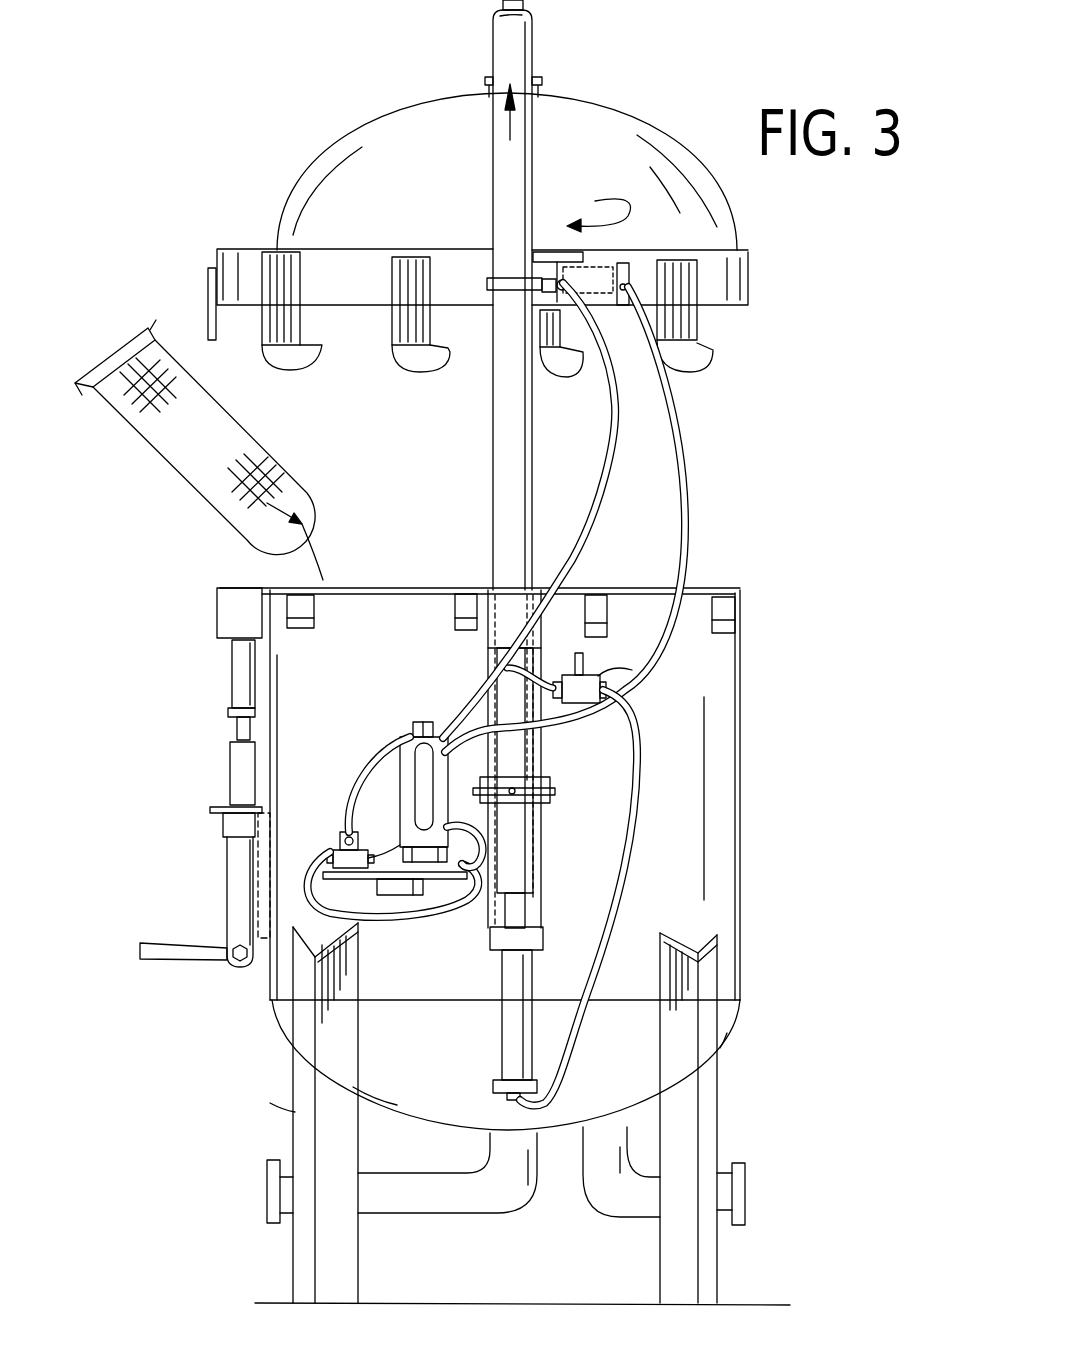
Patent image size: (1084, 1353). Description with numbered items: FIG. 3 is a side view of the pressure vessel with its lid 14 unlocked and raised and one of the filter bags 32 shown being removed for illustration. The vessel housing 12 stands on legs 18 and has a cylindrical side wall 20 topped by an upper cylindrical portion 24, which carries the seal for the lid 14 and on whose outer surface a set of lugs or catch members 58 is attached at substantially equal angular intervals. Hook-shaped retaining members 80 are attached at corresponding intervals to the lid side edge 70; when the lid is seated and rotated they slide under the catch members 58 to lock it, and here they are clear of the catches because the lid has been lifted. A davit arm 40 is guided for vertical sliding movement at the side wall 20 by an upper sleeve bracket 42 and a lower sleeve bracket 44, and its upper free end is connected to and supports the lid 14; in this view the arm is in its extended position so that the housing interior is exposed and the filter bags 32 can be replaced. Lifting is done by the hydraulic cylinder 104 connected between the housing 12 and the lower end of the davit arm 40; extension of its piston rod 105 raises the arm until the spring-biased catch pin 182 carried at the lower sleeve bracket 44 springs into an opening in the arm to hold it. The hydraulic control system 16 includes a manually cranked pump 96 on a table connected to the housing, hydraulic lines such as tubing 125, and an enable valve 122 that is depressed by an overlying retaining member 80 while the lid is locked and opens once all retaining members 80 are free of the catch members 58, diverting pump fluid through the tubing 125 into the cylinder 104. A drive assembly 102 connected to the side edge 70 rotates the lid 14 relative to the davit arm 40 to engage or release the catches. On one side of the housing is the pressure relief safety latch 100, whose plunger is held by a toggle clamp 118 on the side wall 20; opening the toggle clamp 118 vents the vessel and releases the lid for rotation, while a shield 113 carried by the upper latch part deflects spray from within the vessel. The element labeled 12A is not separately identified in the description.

The housing 12 is at (722, 727).
The hose 12A is at (598, 466).
The lid 14 is at (370, 153).
The hydraulic control system 16 is at (336, 798).
The legs 18 is at (292, 1107).
The cylindrical side wall 20 is at (385, 686).
The upper cylindrical portion 24 is at (374, 610).
The filter bags 32 is at (170, 452).
The davit arm 40 is at (493, 440).
The upper sleeve bracket 42 is at (494, 632).
The lower sleeve bracket 44 is at (550, 783).
The catch members 58 is at (303, 632).
The lid side edge 70 is at (750, 288).
The retaining members 80 is at (413, 353).
The pump 96 is at (404, 737).
The pressure relief safety latch 100 is at (210, 694).
The drive assembly 102 is at (600, 270).
The cylinder 104 is at (503, 975).
The piston rod 105 is at (535, 903).
The shield 113 is at (207, 306).
The toggle clamp 118 is at (195, 1002).
The enable valve 122 is at (606, 684).
The tubing 125 is at (636, 842).
The spring biased catch pin 182 is at (530, 795).